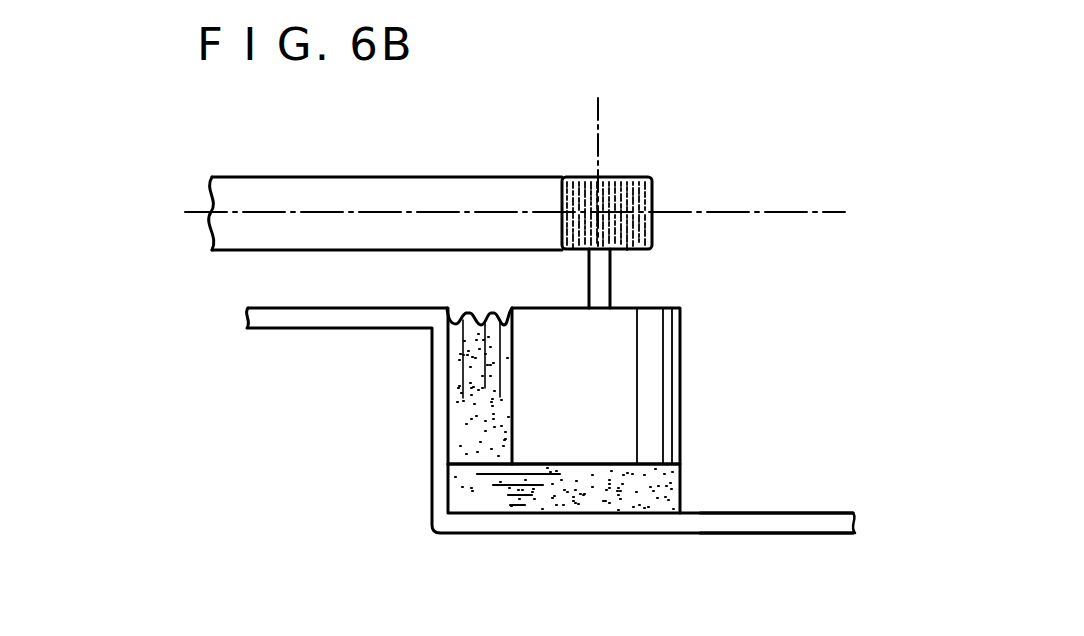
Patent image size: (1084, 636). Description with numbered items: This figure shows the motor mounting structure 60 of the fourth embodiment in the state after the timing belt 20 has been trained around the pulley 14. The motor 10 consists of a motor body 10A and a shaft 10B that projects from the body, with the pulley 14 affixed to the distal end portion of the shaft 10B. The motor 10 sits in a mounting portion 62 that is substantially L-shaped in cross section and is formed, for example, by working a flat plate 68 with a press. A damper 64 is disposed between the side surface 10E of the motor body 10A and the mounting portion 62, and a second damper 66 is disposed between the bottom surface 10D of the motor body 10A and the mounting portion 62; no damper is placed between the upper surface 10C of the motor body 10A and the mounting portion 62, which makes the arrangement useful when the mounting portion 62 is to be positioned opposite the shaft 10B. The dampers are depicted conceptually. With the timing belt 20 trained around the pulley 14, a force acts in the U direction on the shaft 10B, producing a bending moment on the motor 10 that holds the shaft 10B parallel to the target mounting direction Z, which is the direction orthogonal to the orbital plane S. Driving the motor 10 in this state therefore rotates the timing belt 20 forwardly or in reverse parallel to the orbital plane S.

The motor mounting structure 60 is at (760, 117).
The timing belt 20 is at (345, 177).
The pulley 14 is at (612, 187).
The motor 10 is at (609, 385).
The motor body 10A is at (628, 360).
The shaft 10B is at (606, 285).
The upper surface 10C is at (533, 305).
The bottom surface 10D is at (607, 463).
The side surface 10E is at (512, 378).
The mounting portion 62 is at (442, 507).
The damper 64 is at (475, 397).
The damper 66 is at (563, 497).
The flat plate 68 is at (858, 518).
The target mounting direction Z is at (597, 112).
The orbital plane S is at (787, 212).
The U direction U is at (175, 215).